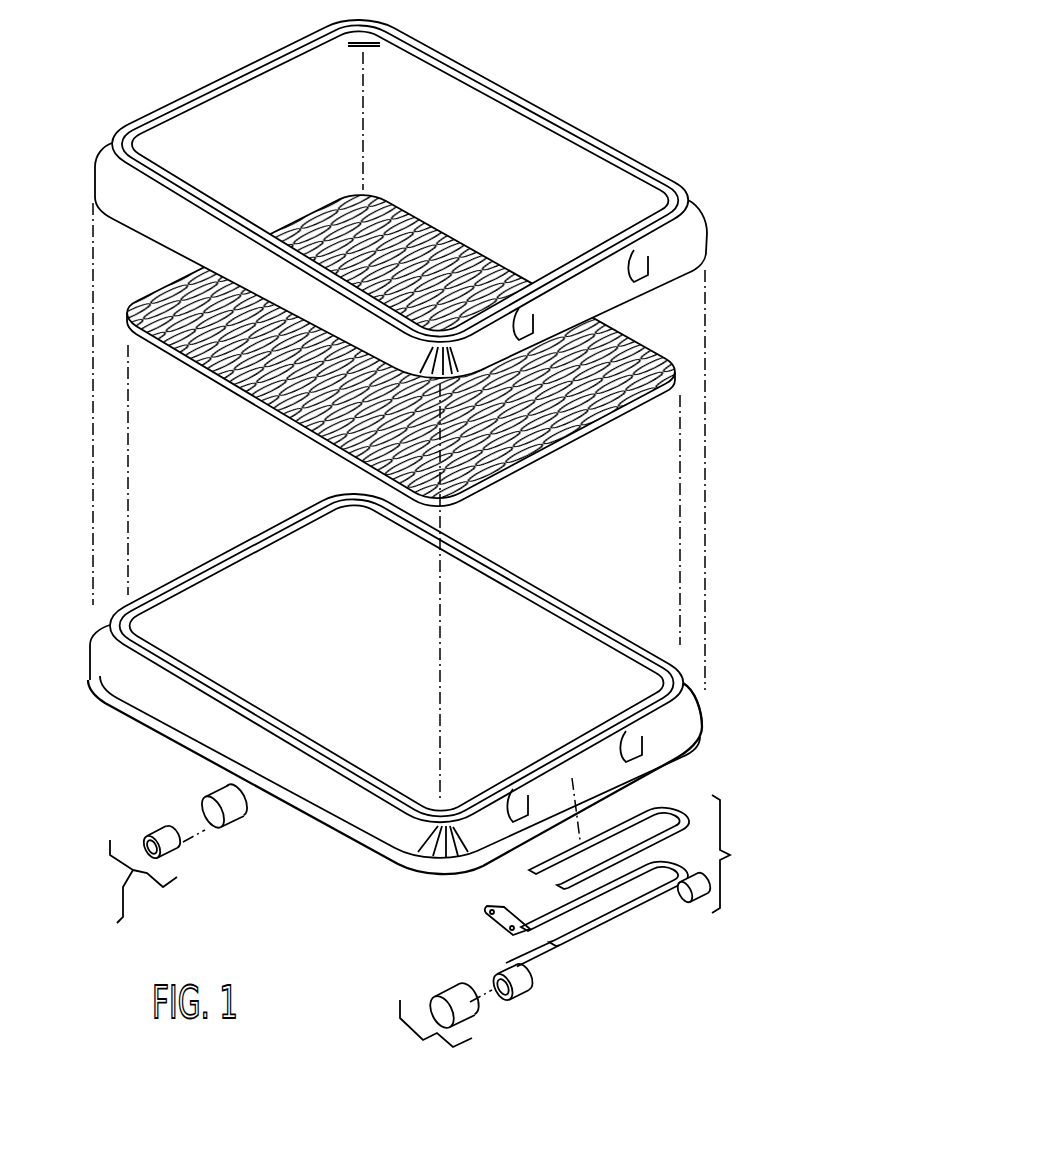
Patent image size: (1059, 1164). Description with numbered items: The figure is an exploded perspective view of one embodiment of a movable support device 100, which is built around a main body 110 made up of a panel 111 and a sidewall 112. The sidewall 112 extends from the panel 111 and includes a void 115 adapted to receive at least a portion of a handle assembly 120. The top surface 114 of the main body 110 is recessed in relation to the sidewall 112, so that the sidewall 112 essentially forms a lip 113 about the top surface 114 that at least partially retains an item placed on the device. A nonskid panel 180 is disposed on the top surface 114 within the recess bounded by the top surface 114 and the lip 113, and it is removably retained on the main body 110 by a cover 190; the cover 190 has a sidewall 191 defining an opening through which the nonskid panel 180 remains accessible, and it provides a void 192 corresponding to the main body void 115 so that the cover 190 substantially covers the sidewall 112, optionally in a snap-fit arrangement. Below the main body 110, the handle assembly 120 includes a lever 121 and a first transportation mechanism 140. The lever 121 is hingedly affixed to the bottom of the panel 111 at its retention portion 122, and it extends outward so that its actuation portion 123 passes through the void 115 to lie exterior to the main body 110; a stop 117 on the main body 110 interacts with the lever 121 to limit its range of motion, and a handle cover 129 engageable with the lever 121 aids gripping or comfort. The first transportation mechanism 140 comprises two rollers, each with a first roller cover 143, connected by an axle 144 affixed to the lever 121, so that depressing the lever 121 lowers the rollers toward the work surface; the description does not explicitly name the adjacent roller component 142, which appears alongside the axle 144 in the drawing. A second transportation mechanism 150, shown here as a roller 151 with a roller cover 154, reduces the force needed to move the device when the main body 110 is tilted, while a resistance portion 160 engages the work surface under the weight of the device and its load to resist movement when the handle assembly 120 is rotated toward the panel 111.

The movable support device 100 is at (582, 80).
The main body 110 is at (410, 707).
The panel 111 is at (262, 578).
The sidewall 112 is at (125, 683).
The lip 113 is at (684, 688).
The top surface 114 is at (515, 718).
The void 115 is at (478, 846).
The stop 117 is at (700, 728).
The handle assembly 120 is at (575, 870).
The lever 121 is at (620, 938).
The retention portion 122 is at (488, 925).
The actuation portion 123 is at (668, 912).
The handle cover 129 is at (655, 813).
The first transportation mechanism 140 is at (487, 994).
The bushing 142 is at (520, 1000).
The first roller cover 143 is at (438, 996).
The axle 144 is at (550, 975).
The second transportation mechanism 150 is at (181, 861).
The roller 151 is at (245, 830).
The roller cover 154 is at (172, 858).
The resistance portion 160 is at (306, 833).
The nonskid panel 180 is at (676, 373).
The cover 190 is at (396, 199).
The sidewall 191 is at (106, 165).
The void 192 is at (645, 262).